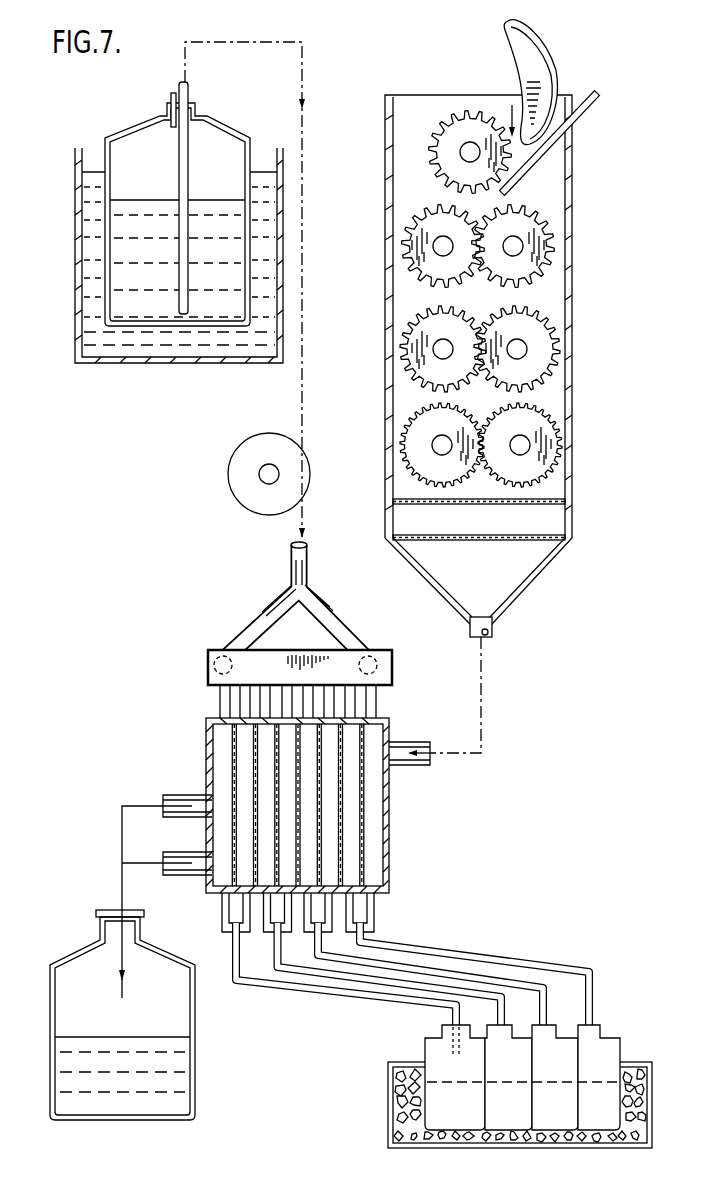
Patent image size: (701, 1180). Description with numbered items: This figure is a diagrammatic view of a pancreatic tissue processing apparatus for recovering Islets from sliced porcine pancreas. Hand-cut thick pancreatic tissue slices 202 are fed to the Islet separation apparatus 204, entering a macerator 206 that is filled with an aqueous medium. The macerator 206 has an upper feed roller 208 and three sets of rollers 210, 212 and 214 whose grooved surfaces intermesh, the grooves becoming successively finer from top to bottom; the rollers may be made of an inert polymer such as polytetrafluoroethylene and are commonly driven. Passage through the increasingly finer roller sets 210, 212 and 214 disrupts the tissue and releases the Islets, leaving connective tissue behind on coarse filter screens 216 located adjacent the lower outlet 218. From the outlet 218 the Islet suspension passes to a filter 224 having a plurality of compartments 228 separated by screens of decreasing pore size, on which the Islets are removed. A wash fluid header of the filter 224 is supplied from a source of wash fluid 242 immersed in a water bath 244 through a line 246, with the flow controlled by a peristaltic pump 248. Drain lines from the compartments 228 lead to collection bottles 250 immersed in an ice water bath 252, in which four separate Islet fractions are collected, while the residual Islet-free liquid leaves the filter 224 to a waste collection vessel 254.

The pancreatic tissue slices 202 is at (537, 52).
The Islet separation apparatus 204 is at (423, 35).
The macerator 206 is at (575, 269).
The upper feed roller 208 is at (441, 134).
The first set of rollers 210 is at (530, 222).
The second set of rollers 212 is at (407, 458).
The third set of rollers 214 is at (552, 433).
The coarse filter screens 216 is at (553, 532).
The lower outlet 218 is at (492, 630).
The filter 224 is at (280, 824).
The compartments 228 is at (350, 846).
The source of wash fluid 242 is at (136, 129).
The water bath 244 is at (72, 352).
The line 246 is at (302, 296).
The peristaltic pump 248 is at (243, 500).
The collection bottles 250 is at (603, 1045).
The ice water bath 252 is at (388, 1097).
The waste collection vessel 254 is at (196, 1040).